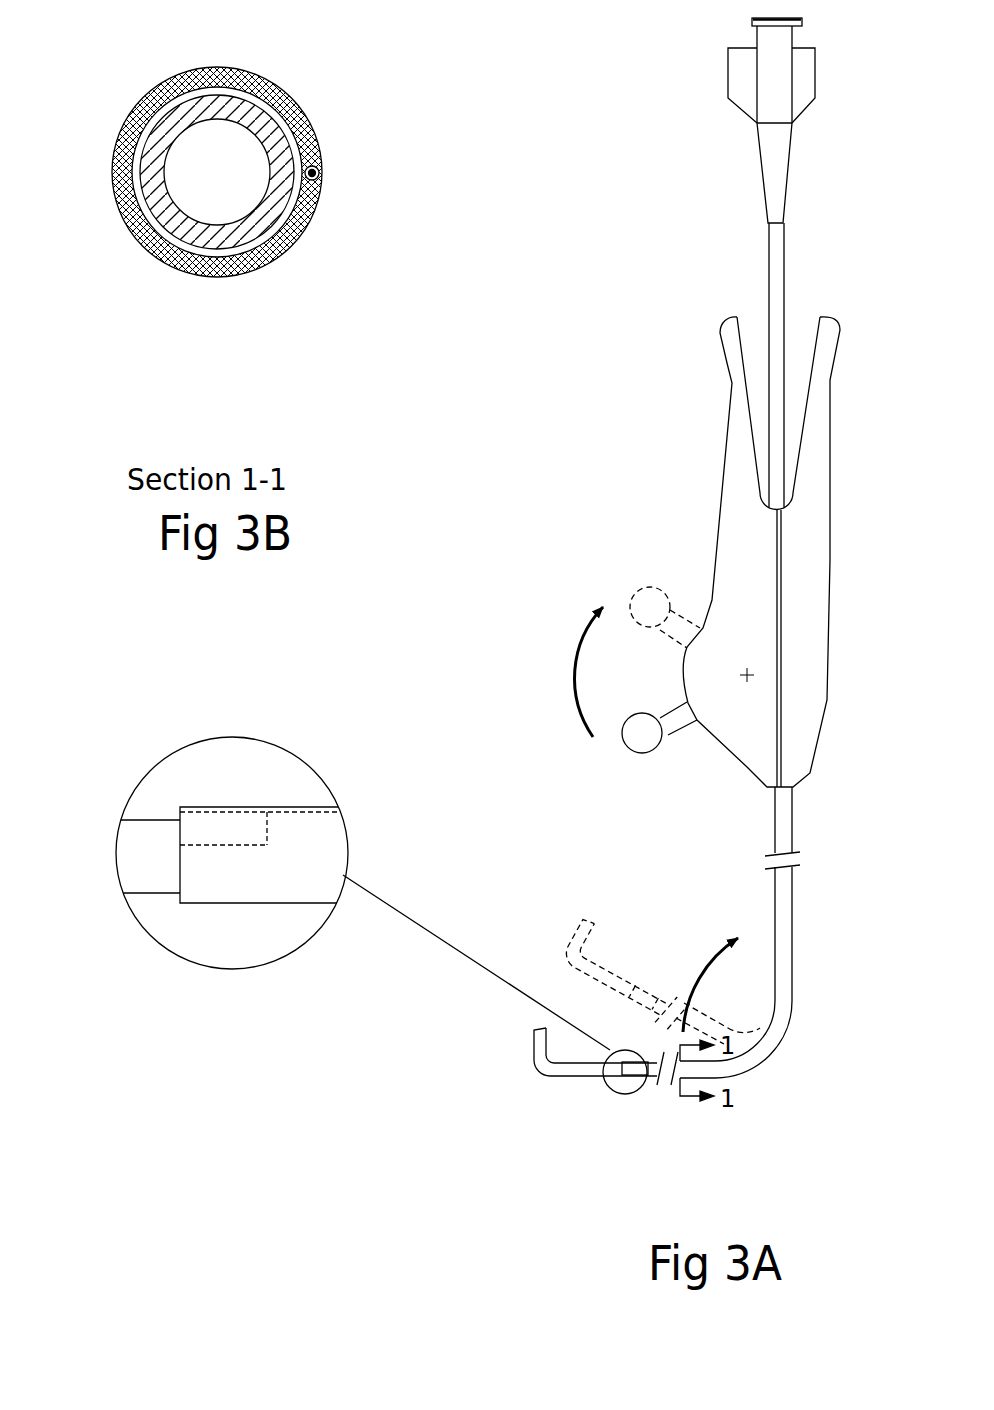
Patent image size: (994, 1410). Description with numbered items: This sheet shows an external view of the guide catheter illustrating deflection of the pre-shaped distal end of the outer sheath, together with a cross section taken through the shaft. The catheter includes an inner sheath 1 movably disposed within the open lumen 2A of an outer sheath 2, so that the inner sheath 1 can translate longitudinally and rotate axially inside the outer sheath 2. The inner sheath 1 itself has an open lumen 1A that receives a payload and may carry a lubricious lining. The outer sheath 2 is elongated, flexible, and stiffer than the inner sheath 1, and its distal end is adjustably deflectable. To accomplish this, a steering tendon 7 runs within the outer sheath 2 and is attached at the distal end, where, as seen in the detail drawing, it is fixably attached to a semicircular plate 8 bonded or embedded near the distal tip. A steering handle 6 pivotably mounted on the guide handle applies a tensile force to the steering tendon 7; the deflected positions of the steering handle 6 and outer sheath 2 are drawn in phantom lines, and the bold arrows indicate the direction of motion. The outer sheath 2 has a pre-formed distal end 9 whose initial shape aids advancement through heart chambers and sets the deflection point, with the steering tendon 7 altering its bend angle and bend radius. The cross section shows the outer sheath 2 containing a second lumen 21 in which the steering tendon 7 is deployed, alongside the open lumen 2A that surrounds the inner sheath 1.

In FIG. 3B, the inner sheath 1 is at (227, 240).
In FIG. 3A, the inner sheath 1 is at (578, 1077).
In FIG. 3B, the open lumen 1A is at (160, 237).
In FIG. 3B, the outer sheath 2 is at (313, 98).
In FIG. 3A, the outer sheath 2 is at (772, 922).
In FIG. 3B, the open lumen 2A is at (220, 83).
In FIG. 3A, the steering handle 6 is at (625, 750).
In FIG. 3B, the steering tendon 7 is at (324, 177).
In FIG. 3A, the steering tendon 7 is at (278, 803).
In FIG. 3A, the semicircular plate 8 is at (268, 838).
In FIG. 3A, the pre-formed distal end 9 is at (790, 1053).
In FIG. 3B, the second lumen 21 is at (321, 192).